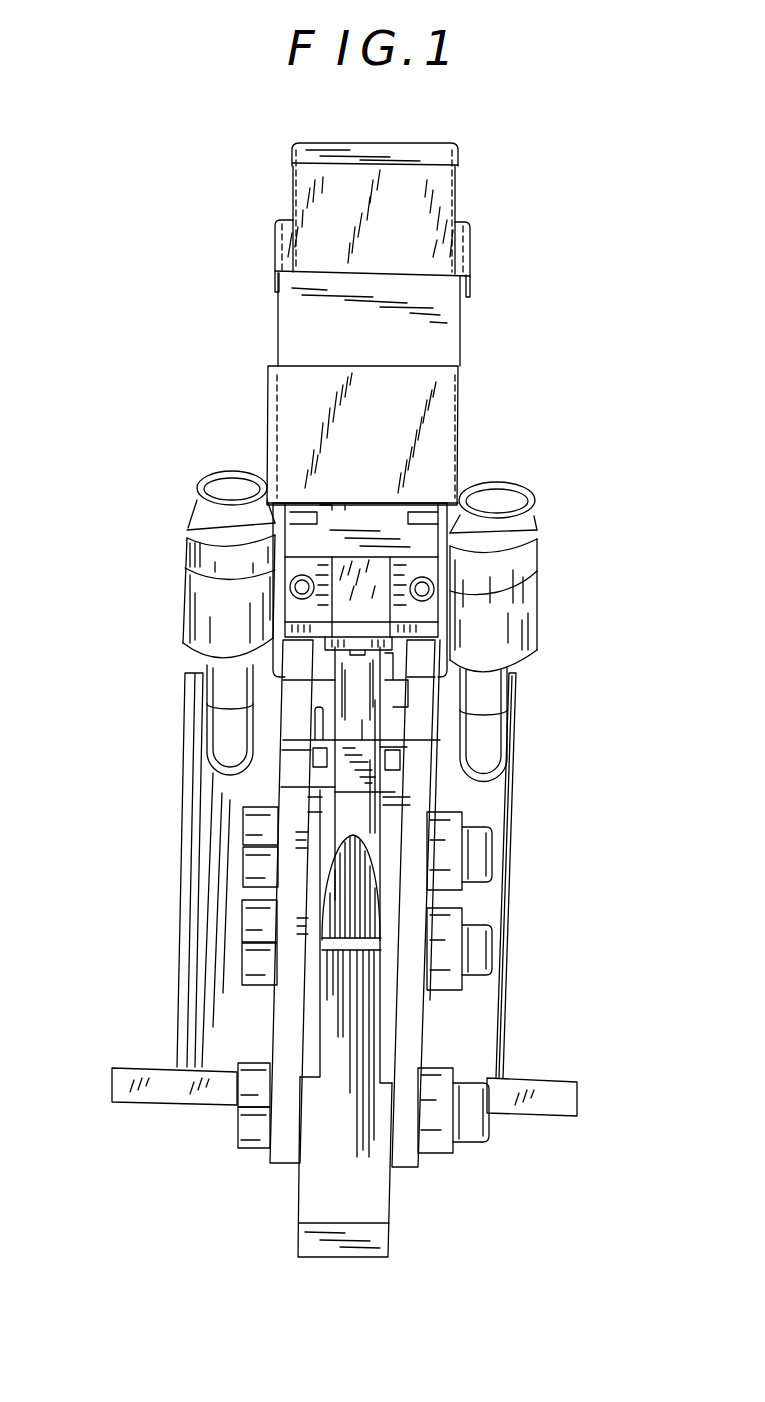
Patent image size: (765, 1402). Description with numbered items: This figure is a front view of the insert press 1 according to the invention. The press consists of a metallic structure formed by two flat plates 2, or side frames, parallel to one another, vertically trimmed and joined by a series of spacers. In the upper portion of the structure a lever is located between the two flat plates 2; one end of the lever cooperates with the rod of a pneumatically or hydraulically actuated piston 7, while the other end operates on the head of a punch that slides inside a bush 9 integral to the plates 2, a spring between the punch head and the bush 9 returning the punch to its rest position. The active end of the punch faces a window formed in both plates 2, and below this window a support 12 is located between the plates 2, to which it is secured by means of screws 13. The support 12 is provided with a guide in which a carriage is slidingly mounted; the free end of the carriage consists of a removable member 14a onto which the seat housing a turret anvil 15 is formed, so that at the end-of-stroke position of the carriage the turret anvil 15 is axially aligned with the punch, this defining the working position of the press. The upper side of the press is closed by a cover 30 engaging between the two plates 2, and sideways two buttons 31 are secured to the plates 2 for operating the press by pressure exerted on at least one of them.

The insert press 1 is at (160, 722).
The flat plates 2 is at (288, 920).
The piston 7 is at (215, 1030).
The bush 9 is at (370, 603).
The support 12 is at (360, 1030).
The screws 13 is at (247, 827).
The removable member 14a is at (387, 773).
The turret anvil 15 is at (363, 703).
The cover 30 is at (412, 197).
The buttons 31 is at (188, 510).